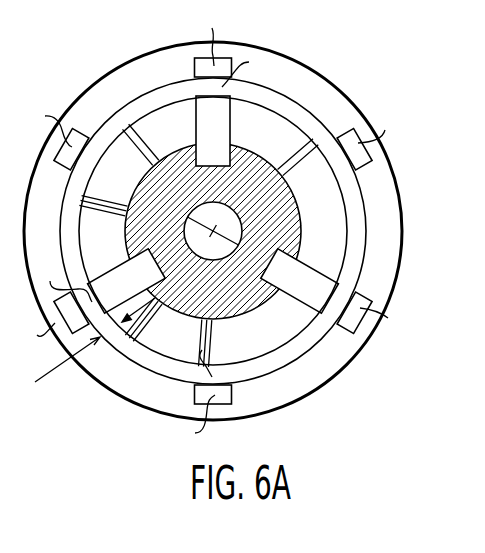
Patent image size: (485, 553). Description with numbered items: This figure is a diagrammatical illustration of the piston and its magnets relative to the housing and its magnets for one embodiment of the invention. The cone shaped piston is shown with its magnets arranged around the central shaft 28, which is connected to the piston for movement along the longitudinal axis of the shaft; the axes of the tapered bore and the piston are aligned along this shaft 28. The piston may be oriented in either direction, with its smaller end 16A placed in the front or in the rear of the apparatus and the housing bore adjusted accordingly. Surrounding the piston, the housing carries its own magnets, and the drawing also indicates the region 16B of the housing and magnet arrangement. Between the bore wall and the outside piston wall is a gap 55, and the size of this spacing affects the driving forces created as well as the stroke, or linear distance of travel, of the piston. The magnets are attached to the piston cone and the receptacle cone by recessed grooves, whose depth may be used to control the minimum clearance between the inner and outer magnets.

The shaft 28 is at (292, 209).
The smaller end of the piston 16A is at (288, 238).
The second stator portion 16B is at (281, 349).
The gap 55 is at (53, 369).